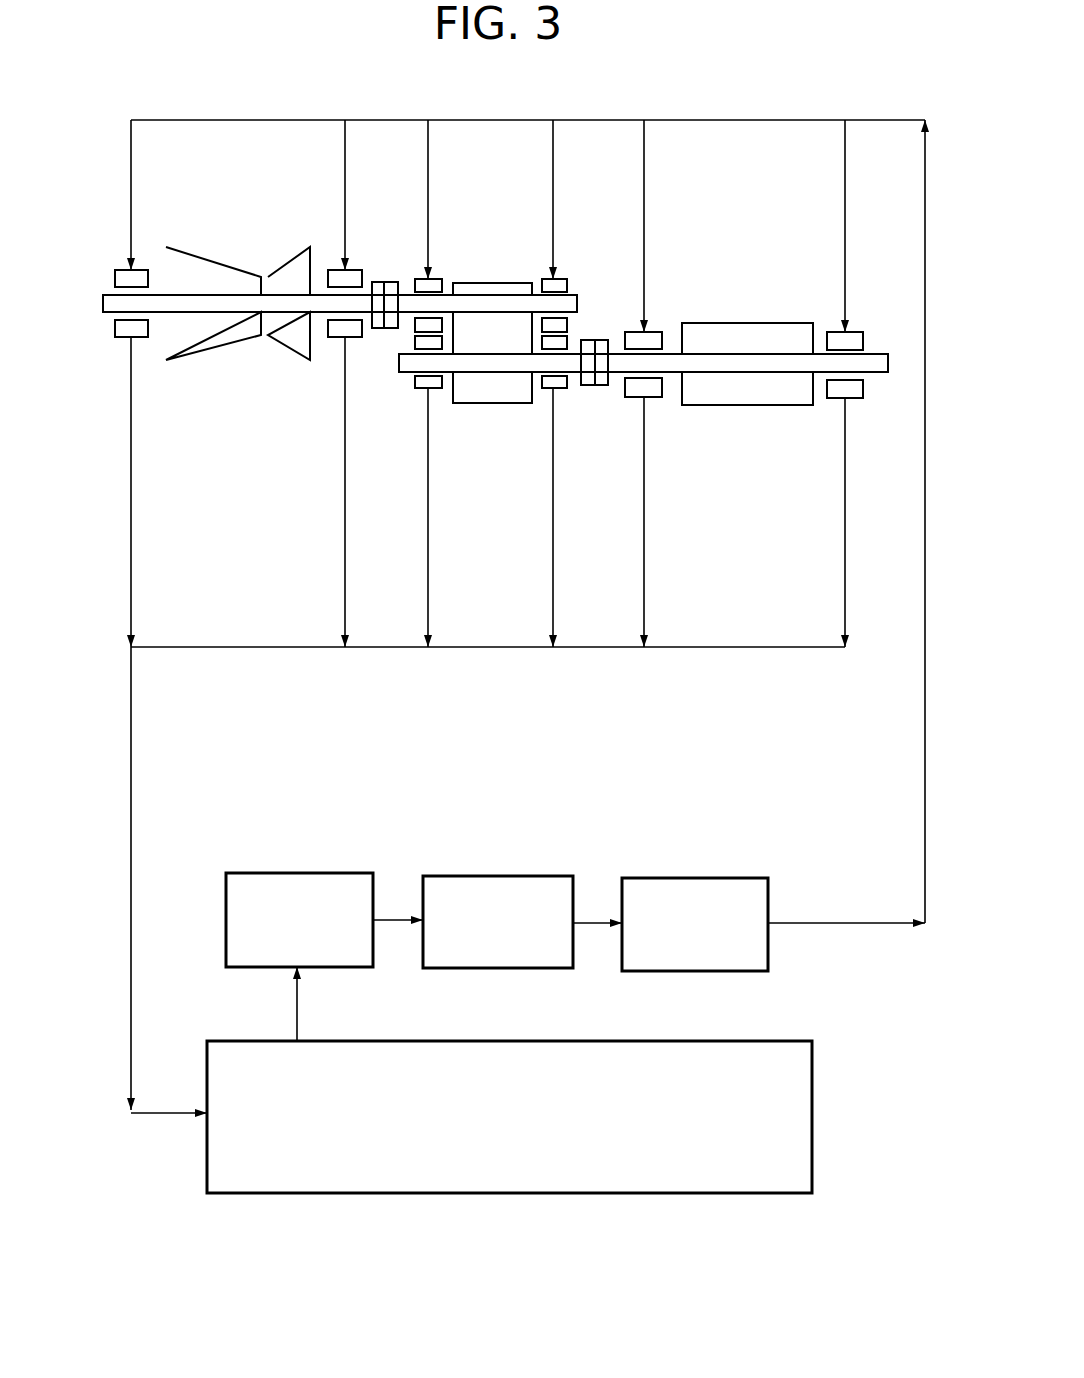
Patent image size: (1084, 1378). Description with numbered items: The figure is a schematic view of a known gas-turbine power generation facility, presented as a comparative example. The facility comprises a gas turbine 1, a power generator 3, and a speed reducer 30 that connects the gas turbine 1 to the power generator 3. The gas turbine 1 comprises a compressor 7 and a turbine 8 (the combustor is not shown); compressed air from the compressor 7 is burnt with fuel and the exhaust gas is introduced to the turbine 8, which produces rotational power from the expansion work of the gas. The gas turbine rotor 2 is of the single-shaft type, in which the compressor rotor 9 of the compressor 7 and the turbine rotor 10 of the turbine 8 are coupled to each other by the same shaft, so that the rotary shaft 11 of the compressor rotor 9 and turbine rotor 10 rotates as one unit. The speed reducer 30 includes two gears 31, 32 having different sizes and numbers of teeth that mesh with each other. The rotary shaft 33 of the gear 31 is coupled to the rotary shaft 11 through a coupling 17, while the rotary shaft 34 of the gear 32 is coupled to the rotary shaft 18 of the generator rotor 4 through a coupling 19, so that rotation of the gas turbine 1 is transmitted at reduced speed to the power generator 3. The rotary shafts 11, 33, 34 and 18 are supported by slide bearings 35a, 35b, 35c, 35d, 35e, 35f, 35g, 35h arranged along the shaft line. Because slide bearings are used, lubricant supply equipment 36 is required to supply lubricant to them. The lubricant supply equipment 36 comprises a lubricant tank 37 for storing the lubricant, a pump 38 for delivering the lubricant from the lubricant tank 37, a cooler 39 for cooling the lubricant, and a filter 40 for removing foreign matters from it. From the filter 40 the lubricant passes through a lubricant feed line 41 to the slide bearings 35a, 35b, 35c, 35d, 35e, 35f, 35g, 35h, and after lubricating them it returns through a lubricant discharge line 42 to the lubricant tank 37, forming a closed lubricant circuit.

The gas turbine 1 is at (206, 212).
The gas turbine rotor 2 is at (222, 200).
The power generator 3 is at (749, 282).
The generator rotor 4 is at (793, 323).
The compressor 7 is at (171, 244).
The turbine 8 is at (309, 244).
The compressor rotor 9 is at (231, 266).
The turbine rotor 10 is at (272, 267).
The rotary shaft 11 is at (104, 295).
The coupling 17 is at (385, 282).
The rotary shaft 18 is at (888, 355).
The coupling 19 is at (606, 387).
The speed reducer 30 is at (497, 211).
The gear 31 is at (516, 283).
The gear 32 is at (501, 404).
The rotary shaft 33 is at (580, 306).
The rotary shaft 34 is at (406, 374).
The slide bearing 35a is at (125, 339).
The slide bearing 35b is at (338, 338).
The slide bearing 35c is at (441, 277).
The slide bearing 35d is at (566, 277).
The slide bearing 35e is at (433, 390).
The slide bearing 35f is at (561, 390).
The slide bearing 35g is at (656, 398).
The slide bearing 35h is at (857, 399).
The lubricant supply equipment 36 is at (240, 1218).
The lubricant tank 37 is at (797, 1041).
The pump 38 is at (346, 873).
The cooler 39 is at (540, 876).
The filter 40 is at (742, 878).
The lubricant feed line 41 is at (925, 733).
The lubricant discharge line 42 is at (131, 703).